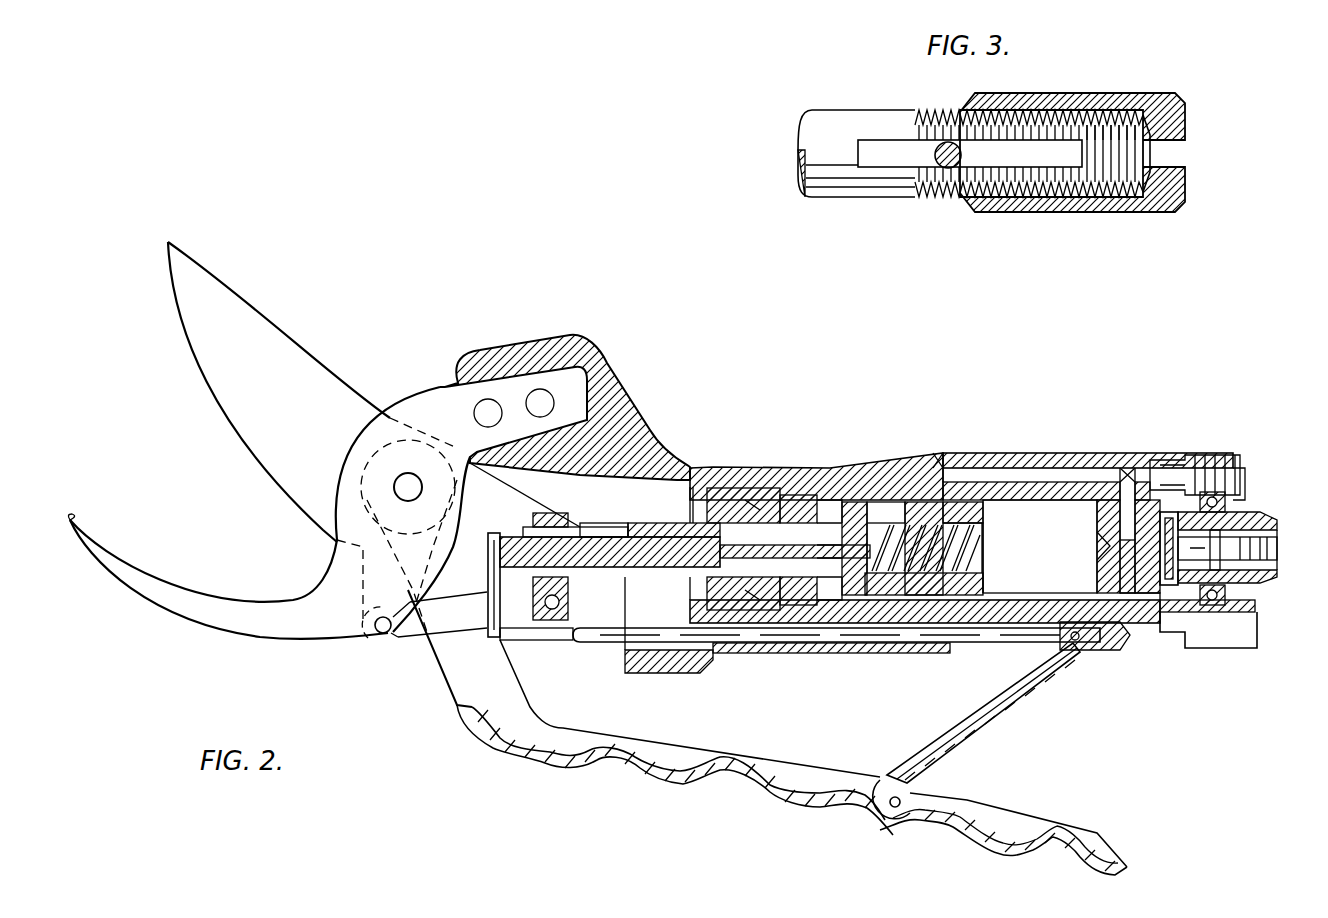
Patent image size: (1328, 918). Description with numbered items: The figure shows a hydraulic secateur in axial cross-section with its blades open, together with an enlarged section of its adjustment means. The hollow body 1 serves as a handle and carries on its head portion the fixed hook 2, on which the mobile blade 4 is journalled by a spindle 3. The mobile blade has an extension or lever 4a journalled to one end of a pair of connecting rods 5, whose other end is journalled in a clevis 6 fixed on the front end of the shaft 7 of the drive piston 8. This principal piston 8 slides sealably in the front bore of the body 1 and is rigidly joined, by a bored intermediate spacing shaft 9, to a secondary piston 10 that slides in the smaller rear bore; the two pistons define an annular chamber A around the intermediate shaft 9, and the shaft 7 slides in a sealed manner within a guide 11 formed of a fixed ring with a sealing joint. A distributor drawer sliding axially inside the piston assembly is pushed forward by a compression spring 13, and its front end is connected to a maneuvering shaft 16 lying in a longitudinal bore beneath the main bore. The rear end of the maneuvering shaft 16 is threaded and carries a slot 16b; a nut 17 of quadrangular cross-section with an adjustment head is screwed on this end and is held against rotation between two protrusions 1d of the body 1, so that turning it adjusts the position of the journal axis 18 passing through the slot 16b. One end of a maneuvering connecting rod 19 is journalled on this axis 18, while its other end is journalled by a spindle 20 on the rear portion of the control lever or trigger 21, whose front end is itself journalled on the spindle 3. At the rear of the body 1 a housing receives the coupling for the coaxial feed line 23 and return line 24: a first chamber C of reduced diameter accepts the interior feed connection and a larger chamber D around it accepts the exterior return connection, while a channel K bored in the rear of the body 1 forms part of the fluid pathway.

In FIG. 2, the hollow body 1 is at (716, 452).
In FIG. 2, the protrusions 1d is at (1232, 632).
In FIG. 2, the fixed hook 2 is at (178, 612).
In FIG. 2, the spindle 3 is at (410, 472).
In FIG. 2, the mobile blade 4 is at (297, 385).
In FIG. 2, the extension or lever 4a is at (377, 637).
In FIG. 2, the connecting rods 5 is at (418, 630).
In FIG. 2, the clevis 6 is at (510, 618).
In FIG. 2, the shaft 7 is at (668, 523).
In FIG. 2, the drive piston 8 is at (807, 490).
In FIG. 2, the intermediate spacing shaft 9 is at (845, 503).
In FIG. 2, the secondary piston 10 is at (920, 503).
In FIG. 2, the guide 11 is at (737, 493).
In FIG. 2, the compression spring 13 is at (947, 520).
In FIG. 2, the maneuvering shaft 16 is at (875, 643).
In FIG. 3, the maneuvering shaft 16 is at (812, 192).
In FIG. 3, the slot 16b is at (890, 160).
In FIG. 2, the nut 17 is at (1098, 650).
In FIG. 3, the nut 17 is at (1020, 212).
In FIG. 2, the journal axis 18 is at (1075, 645).
In FIG. 3, the journal axis 18 is at (942, 168).
In FIG. 2, the maneuvering connecting rod 19 is at (945, 742).
In FIG. 2, the spindle 20 is at (888, 810).
In FIG. 2, the control lever or trigger 21 is at (722, 772).
In FIG. 2, the feed line 23 is at (1277, 548).
In FIG. 2, the return line 24 is at (1240, 585).
In FIG. 2, the annular chamber A is at (857, 498).
In FIG. 2, the first chamber C is at (1123, 553).
In FIG. 2, the chamber D is at (1172, 588).
In FIG. 2, the channel K is at (1138, 612).